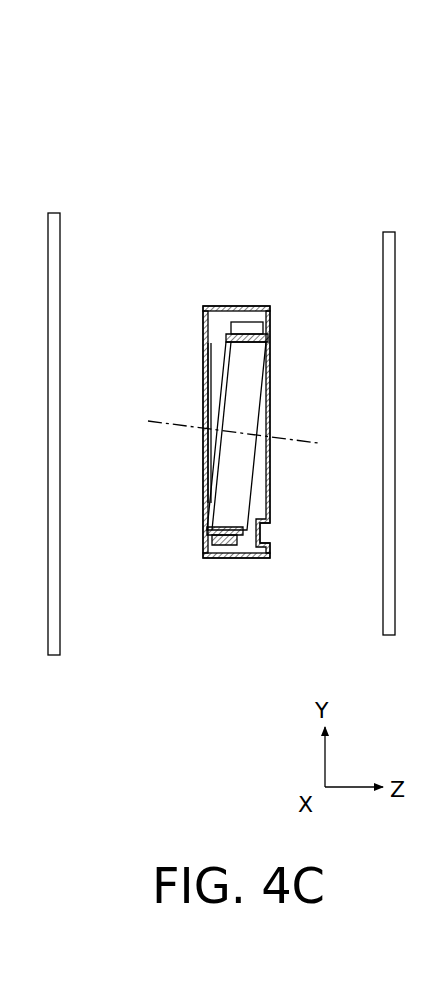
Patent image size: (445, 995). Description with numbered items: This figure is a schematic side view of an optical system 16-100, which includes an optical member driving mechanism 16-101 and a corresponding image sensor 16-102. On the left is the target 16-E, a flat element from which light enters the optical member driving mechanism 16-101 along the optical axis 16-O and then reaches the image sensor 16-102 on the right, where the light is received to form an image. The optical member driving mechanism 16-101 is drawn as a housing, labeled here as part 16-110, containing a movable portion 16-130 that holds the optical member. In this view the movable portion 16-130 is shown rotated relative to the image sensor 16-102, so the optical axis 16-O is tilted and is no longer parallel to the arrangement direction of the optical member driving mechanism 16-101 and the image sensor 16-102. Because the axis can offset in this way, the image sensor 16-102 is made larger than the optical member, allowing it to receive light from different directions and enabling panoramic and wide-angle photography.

The optical system 16-100 is at (273, 26).
The optical member driving mechanism 16-101 is at (236, 380).
The image sensor 16-102 is at (390, 231).
The fixed part / frame 16-110 is at (203, 323).
The movable portion 16-130 is at (253, 362).
The target 16-E is at (52, 212).
The optical axis 16-O is at (262, 440).